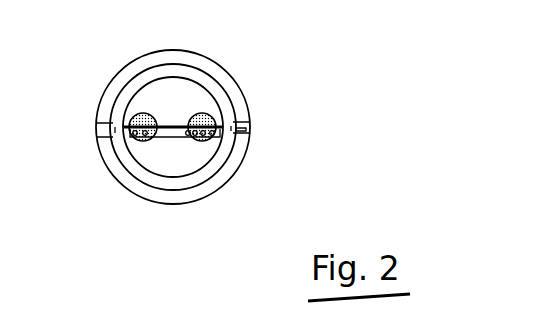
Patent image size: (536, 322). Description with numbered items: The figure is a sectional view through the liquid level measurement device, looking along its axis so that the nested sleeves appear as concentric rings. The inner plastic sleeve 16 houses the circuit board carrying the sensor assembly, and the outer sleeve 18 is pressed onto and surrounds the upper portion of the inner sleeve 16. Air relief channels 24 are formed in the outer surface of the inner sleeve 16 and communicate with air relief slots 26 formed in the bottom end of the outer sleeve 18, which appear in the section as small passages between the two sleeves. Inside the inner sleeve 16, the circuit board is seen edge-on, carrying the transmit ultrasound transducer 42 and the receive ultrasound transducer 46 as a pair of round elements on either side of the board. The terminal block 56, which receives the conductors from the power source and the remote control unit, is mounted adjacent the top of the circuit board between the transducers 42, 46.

The inner plastic sleeve 16 is at (222, 95).
The outer sleeve 18 is at (191, 191).
The air relief channels 24 is at (243, 133).
The air relief slots 26 is at (242, 121).
The transmit ultrasound transducer 42 is at (200, 113).
The receive ultrasound transducer 46 is at (143, 113).
The terminal block 56 is at (172, 130).